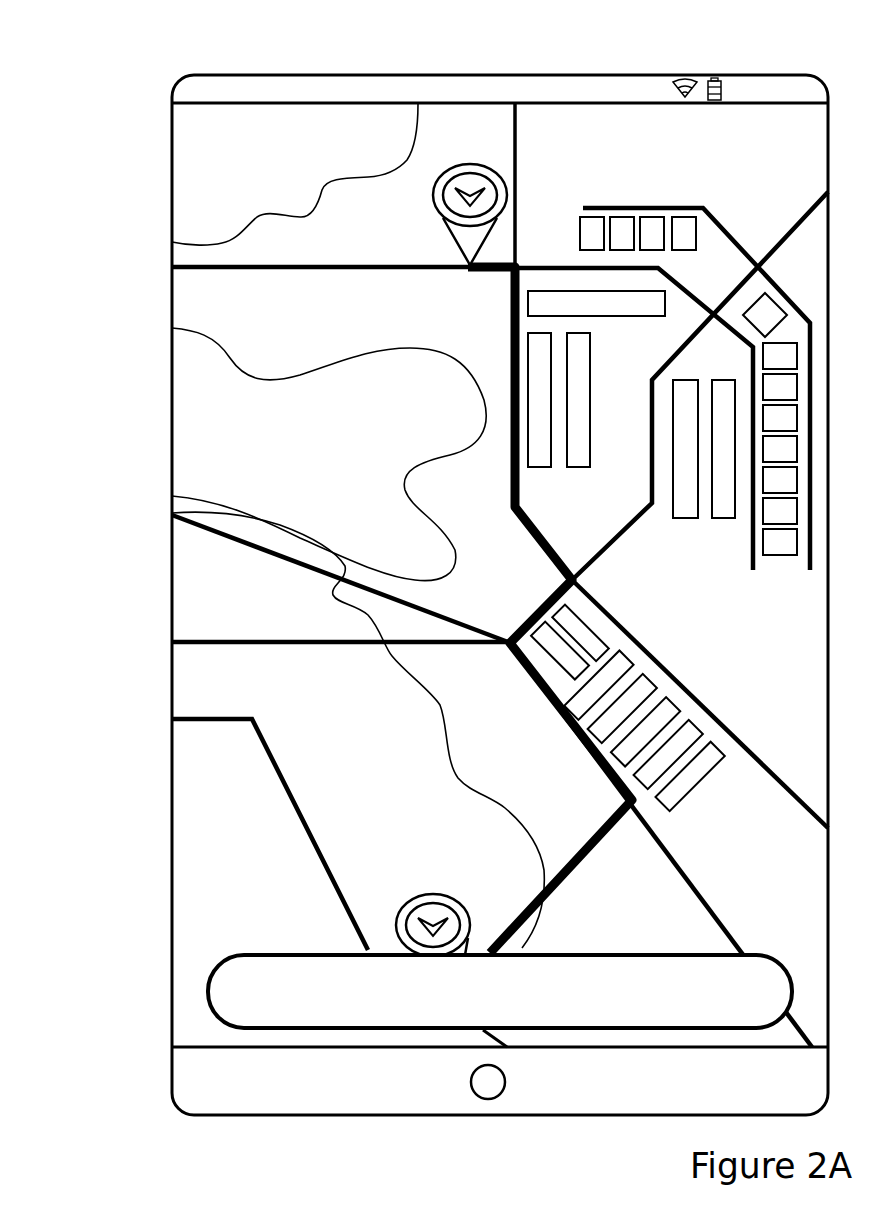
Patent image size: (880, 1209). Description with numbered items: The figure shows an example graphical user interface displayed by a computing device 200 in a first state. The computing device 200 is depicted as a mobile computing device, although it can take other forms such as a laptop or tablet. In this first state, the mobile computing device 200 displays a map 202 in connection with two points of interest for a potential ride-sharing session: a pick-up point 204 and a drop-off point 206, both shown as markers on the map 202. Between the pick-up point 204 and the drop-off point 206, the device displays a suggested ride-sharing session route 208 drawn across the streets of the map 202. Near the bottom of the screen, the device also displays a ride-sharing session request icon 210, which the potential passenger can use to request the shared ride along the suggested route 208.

The computing device 200 is at (731, 42).
The map 202 is at (190, 175).
The pick-up point 204 is at (437, 185).
The drop-off point 206 is at (417, 897).
The suggested ride-sharing session route 208 is at (525, 533).
The ride-sharing session request icon 210 is at (580, 953).